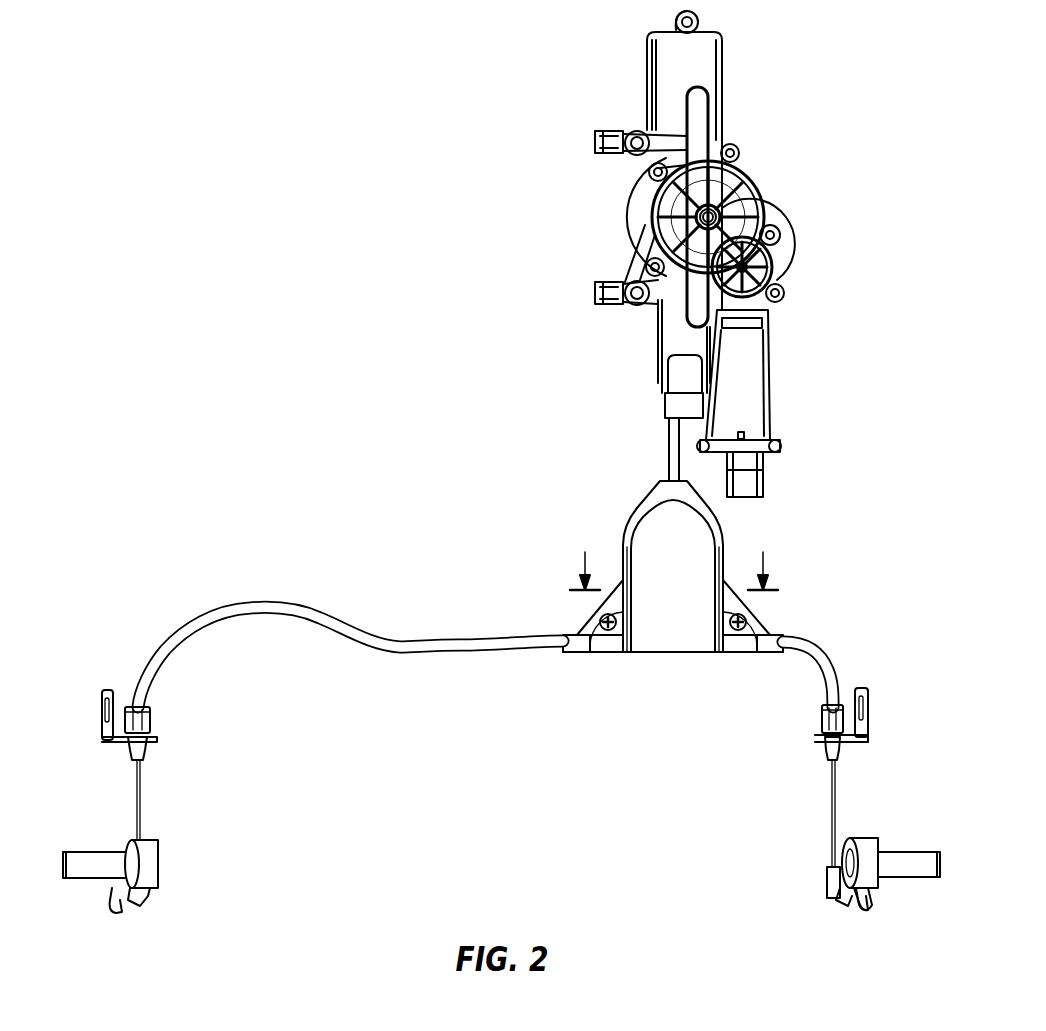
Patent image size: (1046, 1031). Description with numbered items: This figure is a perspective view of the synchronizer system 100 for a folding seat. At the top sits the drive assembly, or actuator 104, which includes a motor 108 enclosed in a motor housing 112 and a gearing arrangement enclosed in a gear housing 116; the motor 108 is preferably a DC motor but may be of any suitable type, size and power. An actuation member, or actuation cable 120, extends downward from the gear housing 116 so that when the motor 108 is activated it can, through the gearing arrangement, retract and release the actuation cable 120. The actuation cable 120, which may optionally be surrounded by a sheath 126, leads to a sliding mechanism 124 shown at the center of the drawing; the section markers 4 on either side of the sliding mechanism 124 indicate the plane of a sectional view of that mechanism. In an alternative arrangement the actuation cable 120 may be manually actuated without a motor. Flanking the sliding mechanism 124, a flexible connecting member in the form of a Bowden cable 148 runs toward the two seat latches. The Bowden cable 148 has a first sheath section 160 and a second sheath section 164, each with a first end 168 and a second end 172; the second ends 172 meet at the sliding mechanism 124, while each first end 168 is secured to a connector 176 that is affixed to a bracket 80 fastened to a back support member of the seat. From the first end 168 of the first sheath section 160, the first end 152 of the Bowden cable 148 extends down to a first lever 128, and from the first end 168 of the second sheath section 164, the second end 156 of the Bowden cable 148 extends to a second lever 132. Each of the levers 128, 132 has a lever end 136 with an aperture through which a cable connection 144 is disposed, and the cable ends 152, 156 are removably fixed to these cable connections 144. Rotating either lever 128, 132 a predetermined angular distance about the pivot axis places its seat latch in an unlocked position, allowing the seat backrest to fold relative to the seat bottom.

The window regulator assembly 100 is at (377, 250).
The actuator 104 is at (807, 252).
The motor 108 is at (750, 403).
The motor housing 112 is at (772, 383).
The gear housing 116 is at (716, 215).
The actuation cable 120 is at (670, 450).
The sliding mechanism 124 is at (627, 507).
The sheath 126 is at (683, 465).
The first lever 128 is at (160, 873).
The second lever 132 is at (860, 838).
The lever end 136 is at (141, 896).
The cable connection 144 is at (113, 906).
The Bowden cable 148 is at (335, 625).
The first end 152 is at (139, 836).
The second end 156 is at (827, 868).
The first sheath section 160 is at (208, 612).
The second sheath section 164 is at (830, 664).
The first end 168 is at (143, 705).
The second end 172 is at (563, 650).
The connector 176 is at (152, 728).
The mounting bracket 80 is at (121, 697).
The section line 4 is at (674, 557).